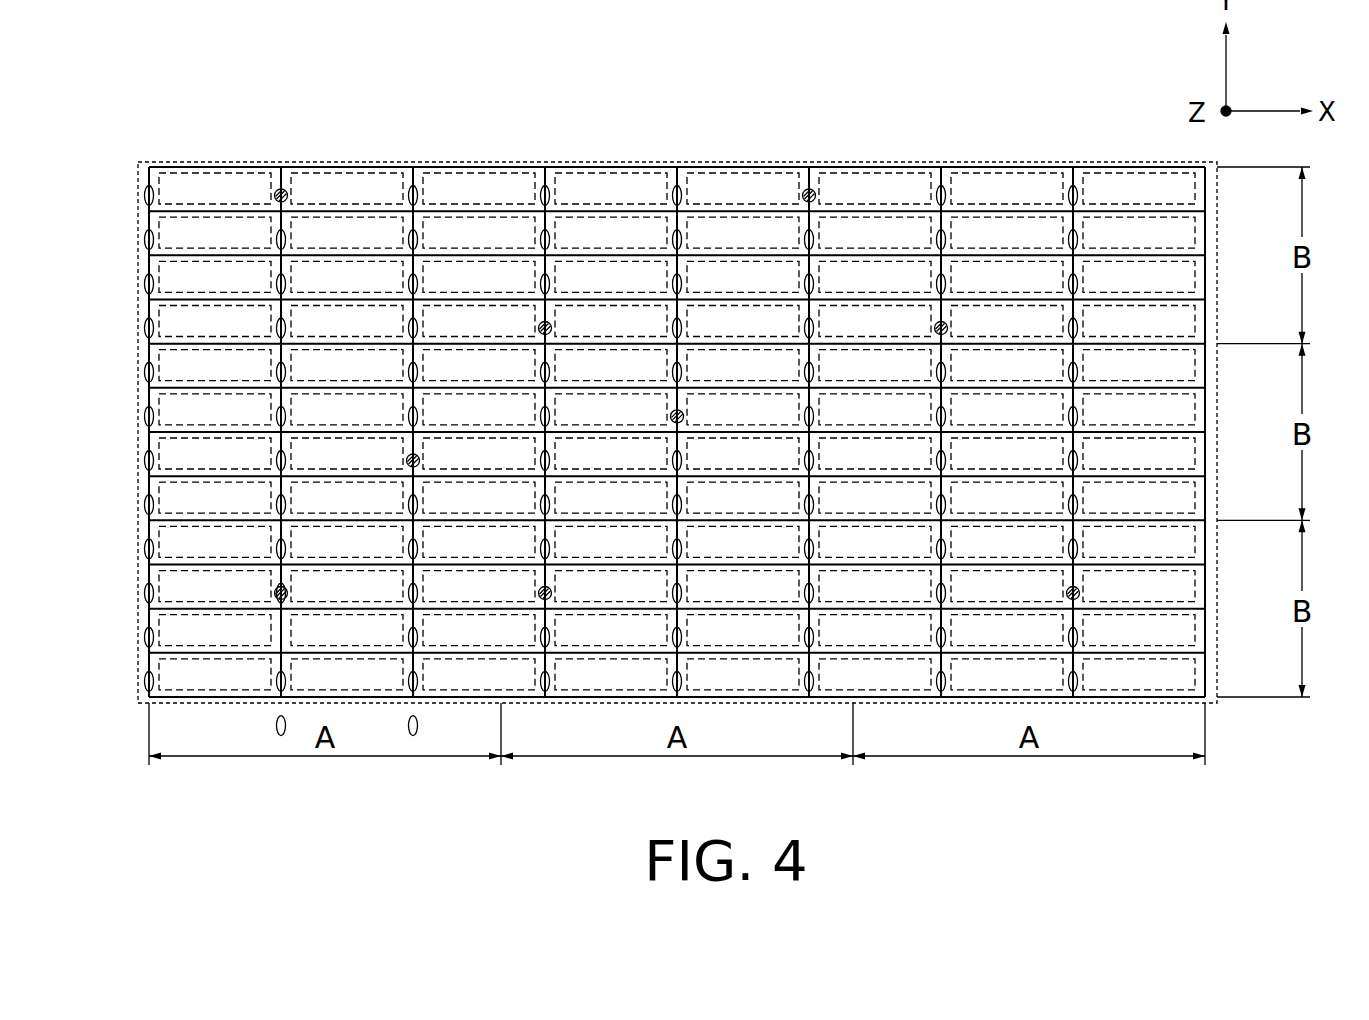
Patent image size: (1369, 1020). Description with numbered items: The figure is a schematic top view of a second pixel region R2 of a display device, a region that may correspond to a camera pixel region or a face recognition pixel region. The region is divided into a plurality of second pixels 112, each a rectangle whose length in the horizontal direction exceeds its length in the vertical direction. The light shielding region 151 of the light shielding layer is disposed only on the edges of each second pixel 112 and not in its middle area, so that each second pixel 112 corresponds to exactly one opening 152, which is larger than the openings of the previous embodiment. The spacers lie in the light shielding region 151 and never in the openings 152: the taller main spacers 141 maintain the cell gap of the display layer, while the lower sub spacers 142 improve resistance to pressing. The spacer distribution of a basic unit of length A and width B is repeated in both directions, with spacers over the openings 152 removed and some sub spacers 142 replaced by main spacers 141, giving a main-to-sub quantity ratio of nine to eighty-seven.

The second pixel region R2 is at (313, 137).
The second pixel 112 is at (1207, 668).
The main spacer 141 is at (1080, 596).
The sub spacer 142 is at (1077, 193).
The light shielding region 151 is at (149, 432).
The opening 152 is at (165, 579).